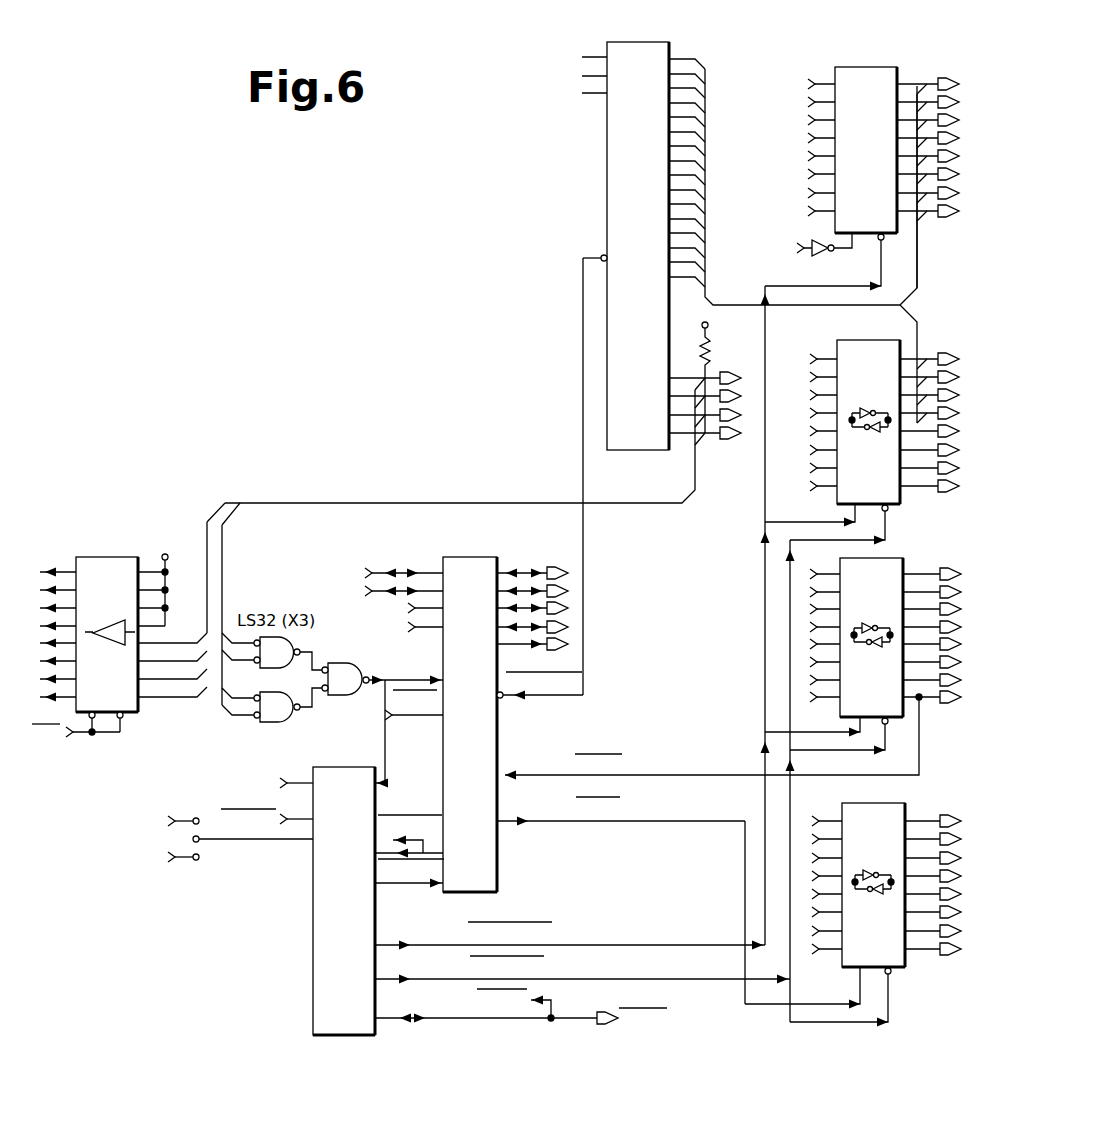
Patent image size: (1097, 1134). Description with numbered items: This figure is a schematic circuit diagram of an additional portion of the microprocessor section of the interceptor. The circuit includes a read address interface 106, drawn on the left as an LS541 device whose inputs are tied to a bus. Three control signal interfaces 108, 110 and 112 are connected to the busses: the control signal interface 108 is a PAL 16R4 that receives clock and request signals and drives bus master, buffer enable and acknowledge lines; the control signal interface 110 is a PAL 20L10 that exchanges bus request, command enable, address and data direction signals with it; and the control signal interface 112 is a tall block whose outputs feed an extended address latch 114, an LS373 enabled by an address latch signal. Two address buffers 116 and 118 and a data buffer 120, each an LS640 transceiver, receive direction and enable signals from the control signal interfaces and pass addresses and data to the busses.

The read address interface 106 is at (112, 557).
The control signal interface 108 is at (313, 955).
The control signal interface 110 is at (498, 892).
The control signal interface 112 is at (650, 452).
The extended address latch 114 is at (845, 67).
The address buffer 116 is at (870, 340).
The address buffer 118 is at (886, 558).
The data buffer 120 is at (903, 806).